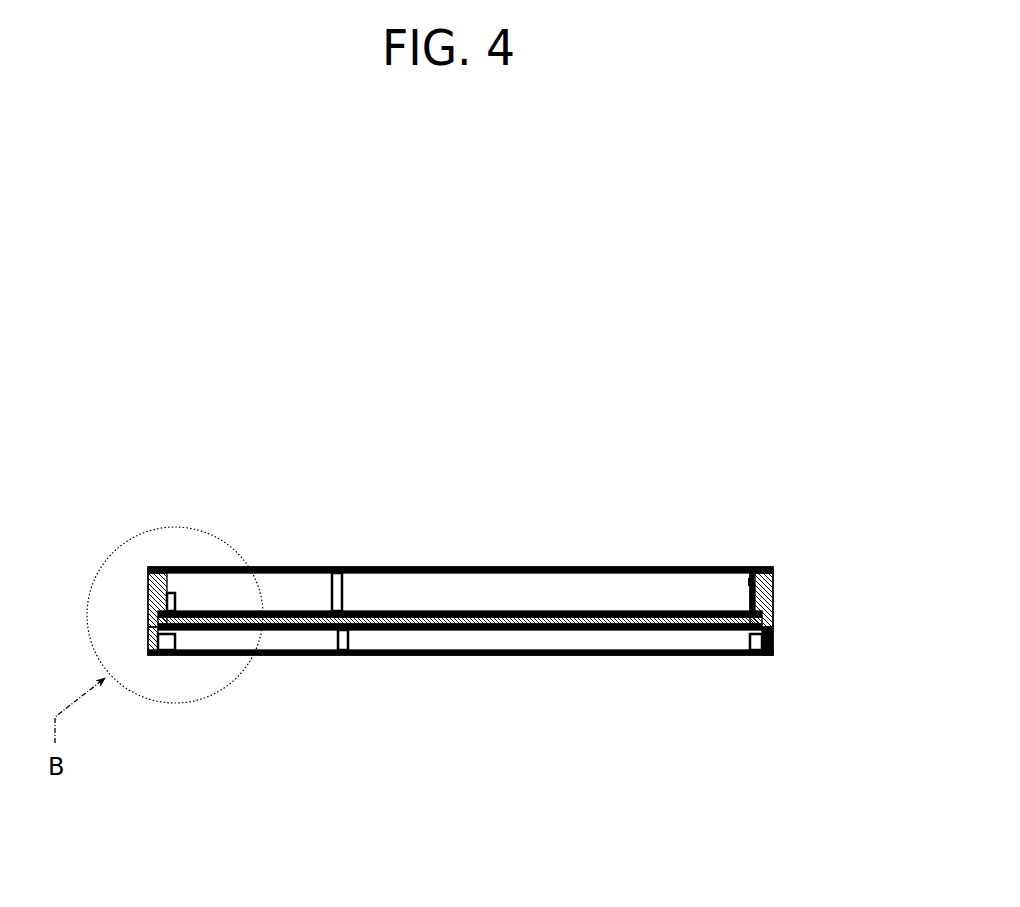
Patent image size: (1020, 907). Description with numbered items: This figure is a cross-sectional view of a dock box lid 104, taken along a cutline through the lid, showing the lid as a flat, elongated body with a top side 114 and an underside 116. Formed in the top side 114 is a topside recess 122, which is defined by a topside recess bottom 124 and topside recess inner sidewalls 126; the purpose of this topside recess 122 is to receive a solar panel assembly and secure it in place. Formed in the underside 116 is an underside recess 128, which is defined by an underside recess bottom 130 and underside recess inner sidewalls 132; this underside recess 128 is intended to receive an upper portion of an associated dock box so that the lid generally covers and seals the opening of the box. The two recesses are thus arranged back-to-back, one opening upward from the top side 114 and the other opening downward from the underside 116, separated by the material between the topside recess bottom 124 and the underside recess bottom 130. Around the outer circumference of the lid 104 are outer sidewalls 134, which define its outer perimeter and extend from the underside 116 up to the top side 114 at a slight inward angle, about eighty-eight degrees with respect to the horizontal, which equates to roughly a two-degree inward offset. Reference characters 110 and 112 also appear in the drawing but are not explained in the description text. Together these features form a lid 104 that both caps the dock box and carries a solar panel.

The dock box lid 104 is at (630, 292).
The housing 110 is at (773, 605).
The end wall of housing 112 is at (147, 620).
The top side 114 is at (618, 567).
The underside 116 is at (628, 653).
The topside recess 122 is at (408, 590).
The topside recess bottom 124 is at (491, 606).
The topside recess inner sidewalls 126 is at (168, 584).
The underside recess 128 is at (521, 634).
The underside recess bottom 130 is at (395, 634).
The underside recess inner sidewalls 132 is at (160, 636).
The outer sidewalls 134 is at (147, 596).